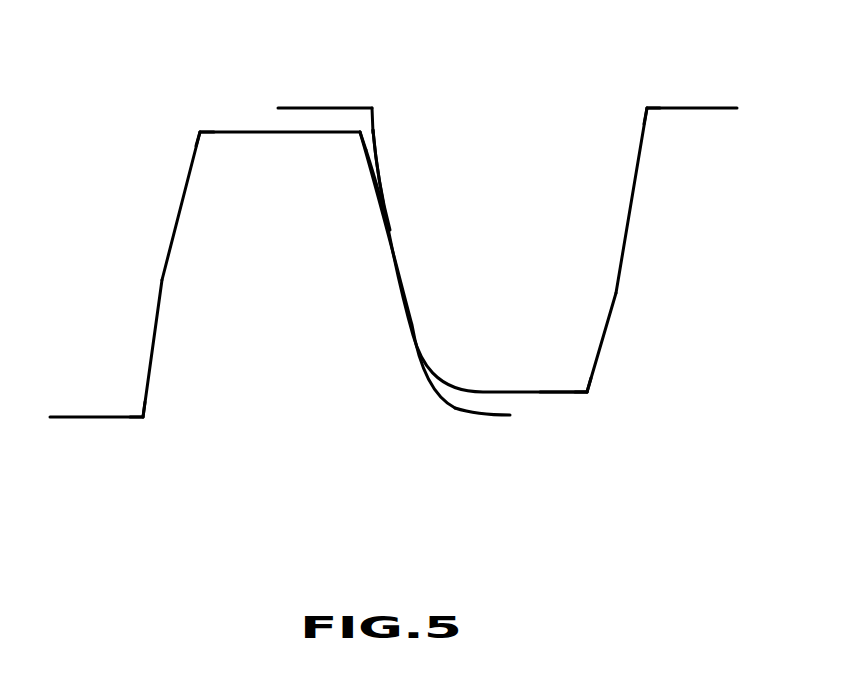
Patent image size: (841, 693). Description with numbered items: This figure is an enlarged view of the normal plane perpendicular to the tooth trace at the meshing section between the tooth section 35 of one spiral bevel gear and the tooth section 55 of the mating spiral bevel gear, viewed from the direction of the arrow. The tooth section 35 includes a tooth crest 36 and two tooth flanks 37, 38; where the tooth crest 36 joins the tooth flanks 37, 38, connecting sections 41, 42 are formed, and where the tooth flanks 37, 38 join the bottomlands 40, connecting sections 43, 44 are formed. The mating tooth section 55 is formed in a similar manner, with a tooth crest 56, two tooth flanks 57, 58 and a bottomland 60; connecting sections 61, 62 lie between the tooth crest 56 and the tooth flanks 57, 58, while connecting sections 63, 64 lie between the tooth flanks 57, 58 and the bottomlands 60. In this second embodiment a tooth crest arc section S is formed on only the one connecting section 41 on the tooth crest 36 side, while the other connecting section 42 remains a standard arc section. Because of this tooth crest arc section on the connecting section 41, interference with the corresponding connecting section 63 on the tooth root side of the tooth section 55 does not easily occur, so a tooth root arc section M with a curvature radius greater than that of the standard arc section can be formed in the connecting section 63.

The tooth section 35 is at (616, 298).
The tooth crest 36 is at (562, 395).
The tooth flank 37 is at (372, 130).
The tooth flank 38 is at (632, 243).
The bottomland 40 is at (300, 108).
The connecting section 41 is at (443, 375).
The connecting section 42 is at (590, 393).
The connecting section 43 is at (373, 112).
The connecting section 44 is at (645, 106).
The tooth section 55 is at (160, 280).
The tooth crest 56 is at (233, 132).
The tooth flank 57 is at (380, 150).
The tooth flank 58 is at (173, 232).
The bottomland 60 is at (112, 417).
The connecting section 61 is at (374, 122).
The connecting section 62 is at (200, 132).
The connecting section 63 is at (436, 397).
The connecting section 64 is at (143, 418).